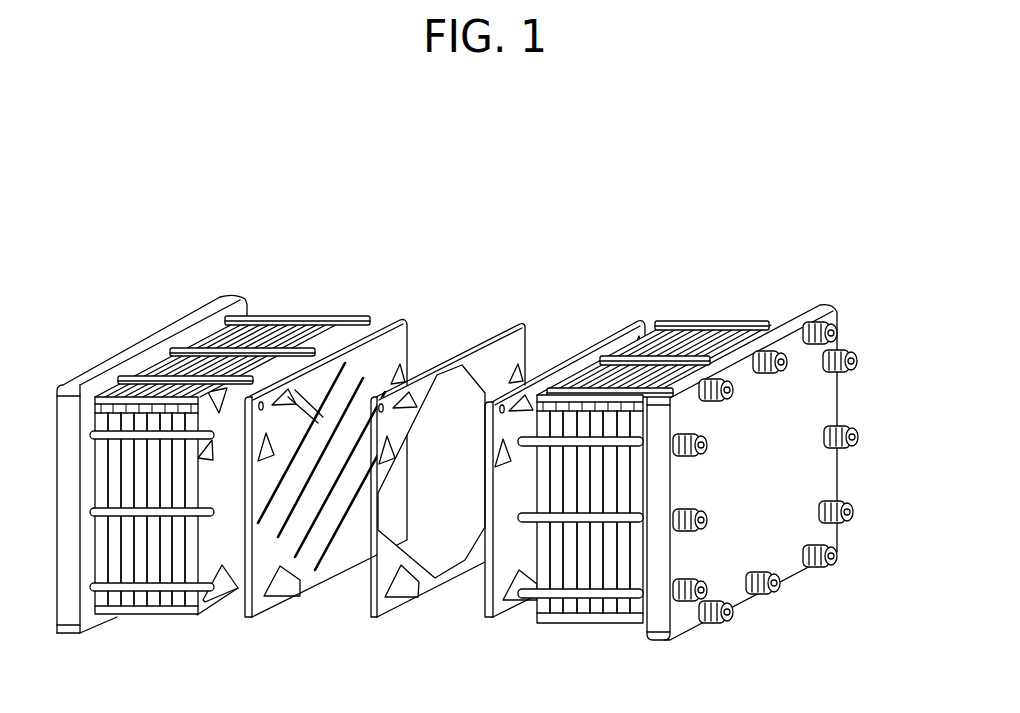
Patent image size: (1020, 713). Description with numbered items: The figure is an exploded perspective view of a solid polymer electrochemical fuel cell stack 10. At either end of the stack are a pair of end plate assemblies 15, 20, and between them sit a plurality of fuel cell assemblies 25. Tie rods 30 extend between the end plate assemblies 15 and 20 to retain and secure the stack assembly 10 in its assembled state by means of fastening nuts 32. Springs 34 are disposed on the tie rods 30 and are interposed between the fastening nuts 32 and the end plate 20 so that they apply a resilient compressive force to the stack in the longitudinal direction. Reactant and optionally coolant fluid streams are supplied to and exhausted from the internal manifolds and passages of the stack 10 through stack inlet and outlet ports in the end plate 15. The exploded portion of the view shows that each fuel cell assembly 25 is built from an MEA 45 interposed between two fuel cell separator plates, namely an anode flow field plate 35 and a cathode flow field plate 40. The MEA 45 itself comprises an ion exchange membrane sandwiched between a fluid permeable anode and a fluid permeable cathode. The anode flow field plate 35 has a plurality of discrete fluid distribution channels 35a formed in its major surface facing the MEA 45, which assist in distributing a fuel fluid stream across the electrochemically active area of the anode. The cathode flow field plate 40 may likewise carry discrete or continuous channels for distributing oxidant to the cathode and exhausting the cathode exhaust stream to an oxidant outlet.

The fuel cell stack 10 is at (257, 218).
The end plate assembly 15 is at (112, 358).
The end plate assembly 20 is at (820, 305).
The fuel cell assembly 25 is at (138, 617).
The tie rods 30 is at (315, 318).
The fastening nuts 32 is at (858, 358).
The springs 34 is at (733, 608).
The anode flow field plate 35 is at (375, 462).
The discrete fluid distribution channels 35a is at (310, 500).
The cathode flow field plate 40 is at (631, 326).
The MEA 45 is at (515, 326).